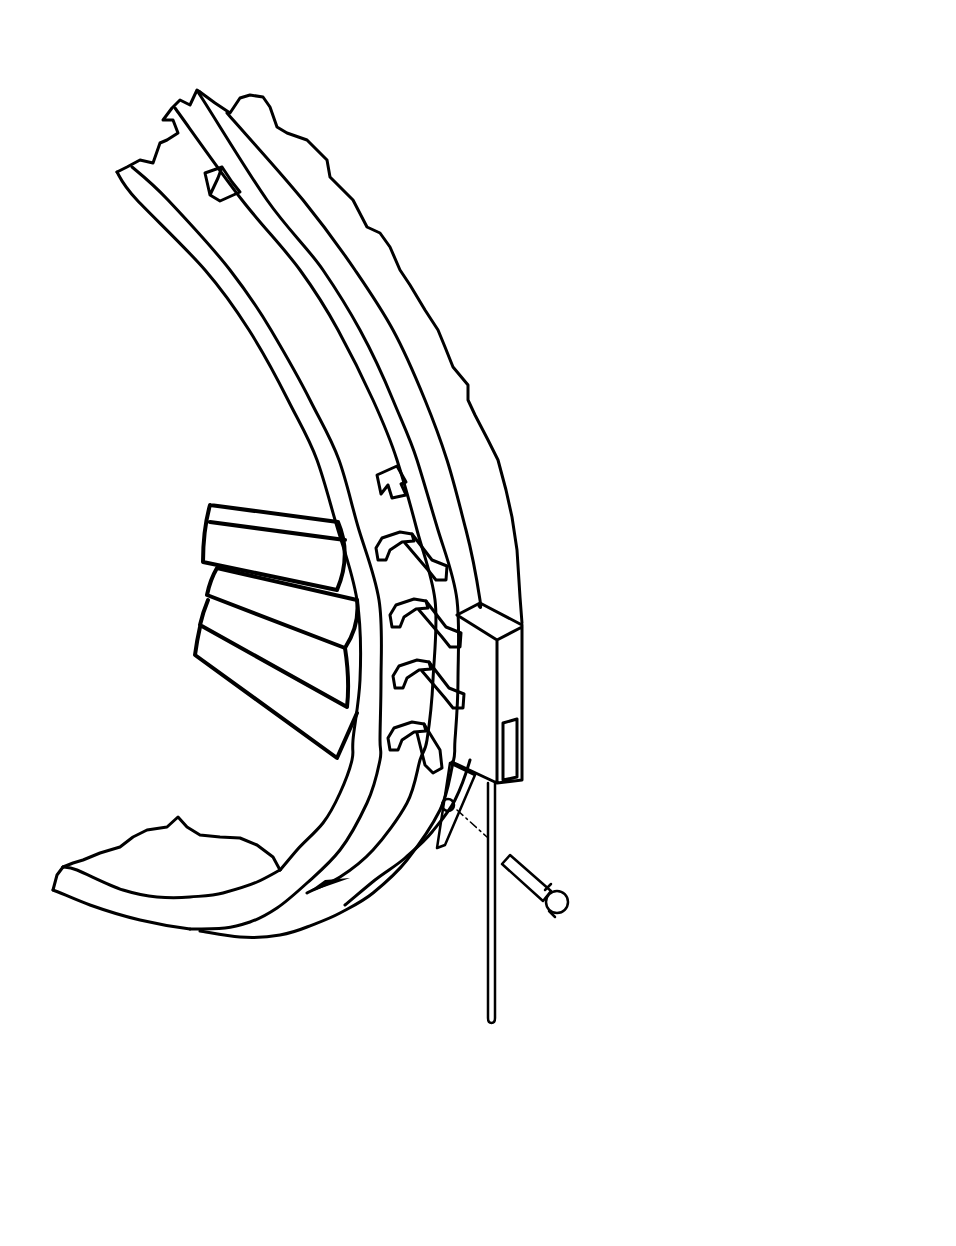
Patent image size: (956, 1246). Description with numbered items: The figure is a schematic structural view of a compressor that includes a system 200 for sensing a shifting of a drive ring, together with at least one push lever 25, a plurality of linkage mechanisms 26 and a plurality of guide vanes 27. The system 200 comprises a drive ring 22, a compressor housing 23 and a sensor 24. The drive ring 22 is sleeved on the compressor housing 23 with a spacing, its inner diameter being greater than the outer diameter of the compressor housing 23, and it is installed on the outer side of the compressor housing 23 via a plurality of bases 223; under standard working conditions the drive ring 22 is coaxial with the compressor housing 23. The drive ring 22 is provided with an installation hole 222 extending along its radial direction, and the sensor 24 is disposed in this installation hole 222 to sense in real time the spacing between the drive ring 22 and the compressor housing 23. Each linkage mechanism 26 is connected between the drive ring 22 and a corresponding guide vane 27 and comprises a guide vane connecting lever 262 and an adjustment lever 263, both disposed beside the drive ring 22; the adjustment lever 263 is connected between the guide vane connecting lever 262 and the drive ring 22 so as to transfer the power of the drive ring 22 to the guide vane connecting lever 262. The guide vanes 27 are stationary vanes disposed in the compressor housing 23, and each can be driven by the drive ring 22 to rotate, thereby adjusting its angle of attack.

The system for sensing a shifting of a drive ring 200 is at (492, 125).
The drive ring 22 is at (357, 882).
The compressor housing 23 is at (146, 903).
The sensor 24 is at (537, 870).
The push lever 25 is at (495, 940).
The linkage mechanism 26 is at (628, 470).
The guide vane connecting lever 262 is at (447, 590).
The adjustment lever 263 is at (450, 612).
The guide vane 27 is at (247, 647).
The installation hole 222 is at (437, 848).
The base 223 is at (407, 478).